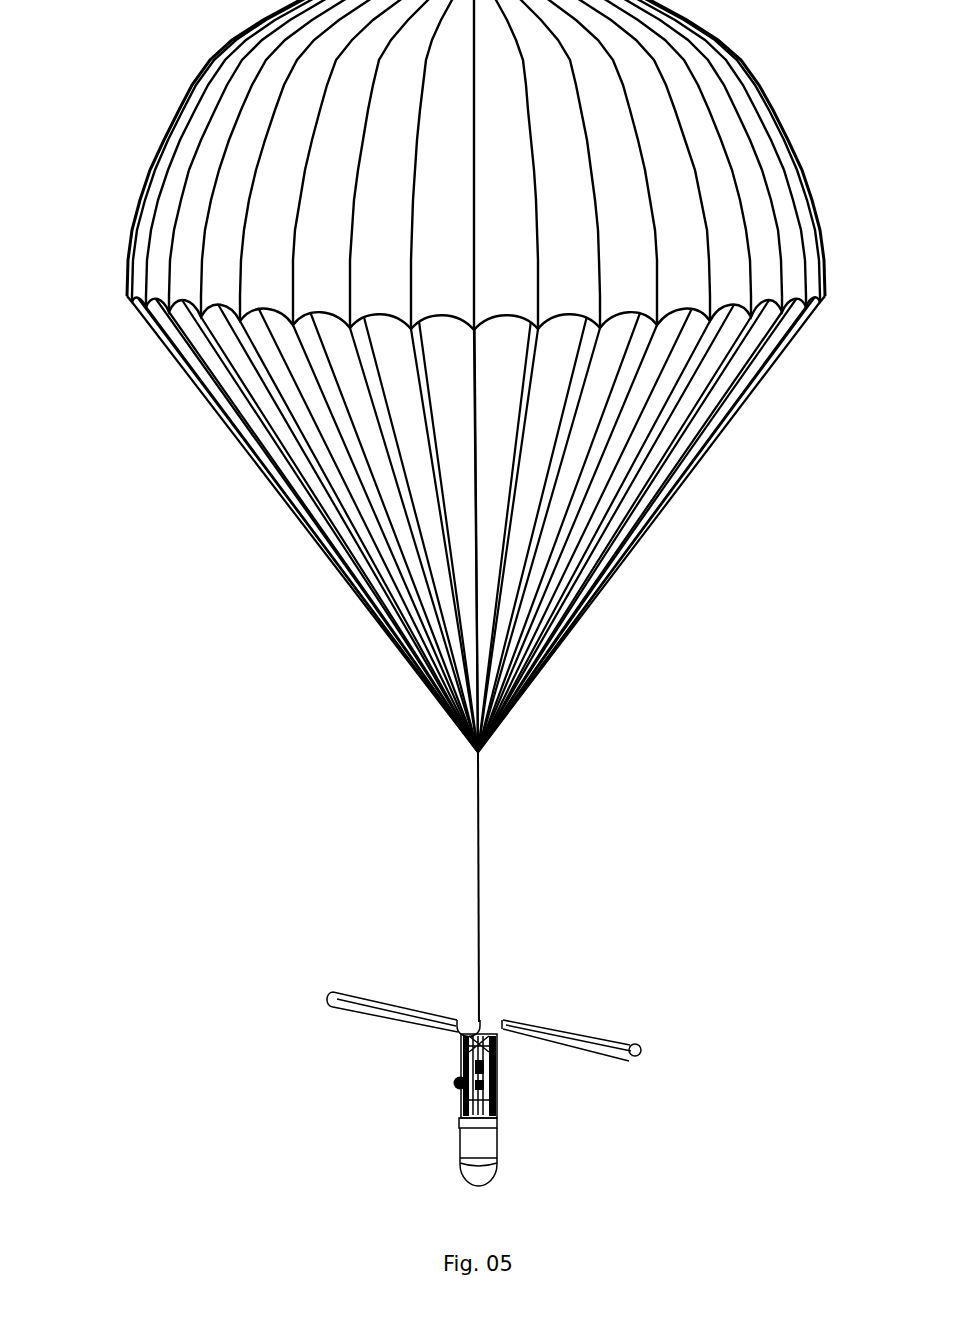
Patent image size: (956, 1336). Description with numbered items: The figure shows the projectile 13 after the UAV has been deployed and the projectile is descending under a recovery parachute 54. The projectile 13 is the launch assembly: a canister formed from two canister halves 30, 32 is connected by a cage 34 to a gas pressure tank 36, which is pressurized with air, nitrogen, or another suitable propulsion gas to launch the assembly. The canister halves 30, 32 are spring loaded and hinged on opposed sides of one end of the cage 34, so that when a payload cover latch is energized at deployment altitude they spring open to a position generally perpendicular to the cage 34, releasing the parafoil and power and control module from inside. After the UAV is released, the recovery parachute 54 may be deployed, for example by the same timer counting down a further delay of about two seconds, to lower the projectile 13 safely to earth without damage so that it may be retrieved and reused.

The projectile 13 is at (381, 1012).
The canister half 30 is at (350, 994).
The canister half 32 is at (623, 1043).
The cage 34 is at (462, 1070).
The gas pressure tank 36 is at (467, 1147).
The recovery parachute 54 is at (195, 217).